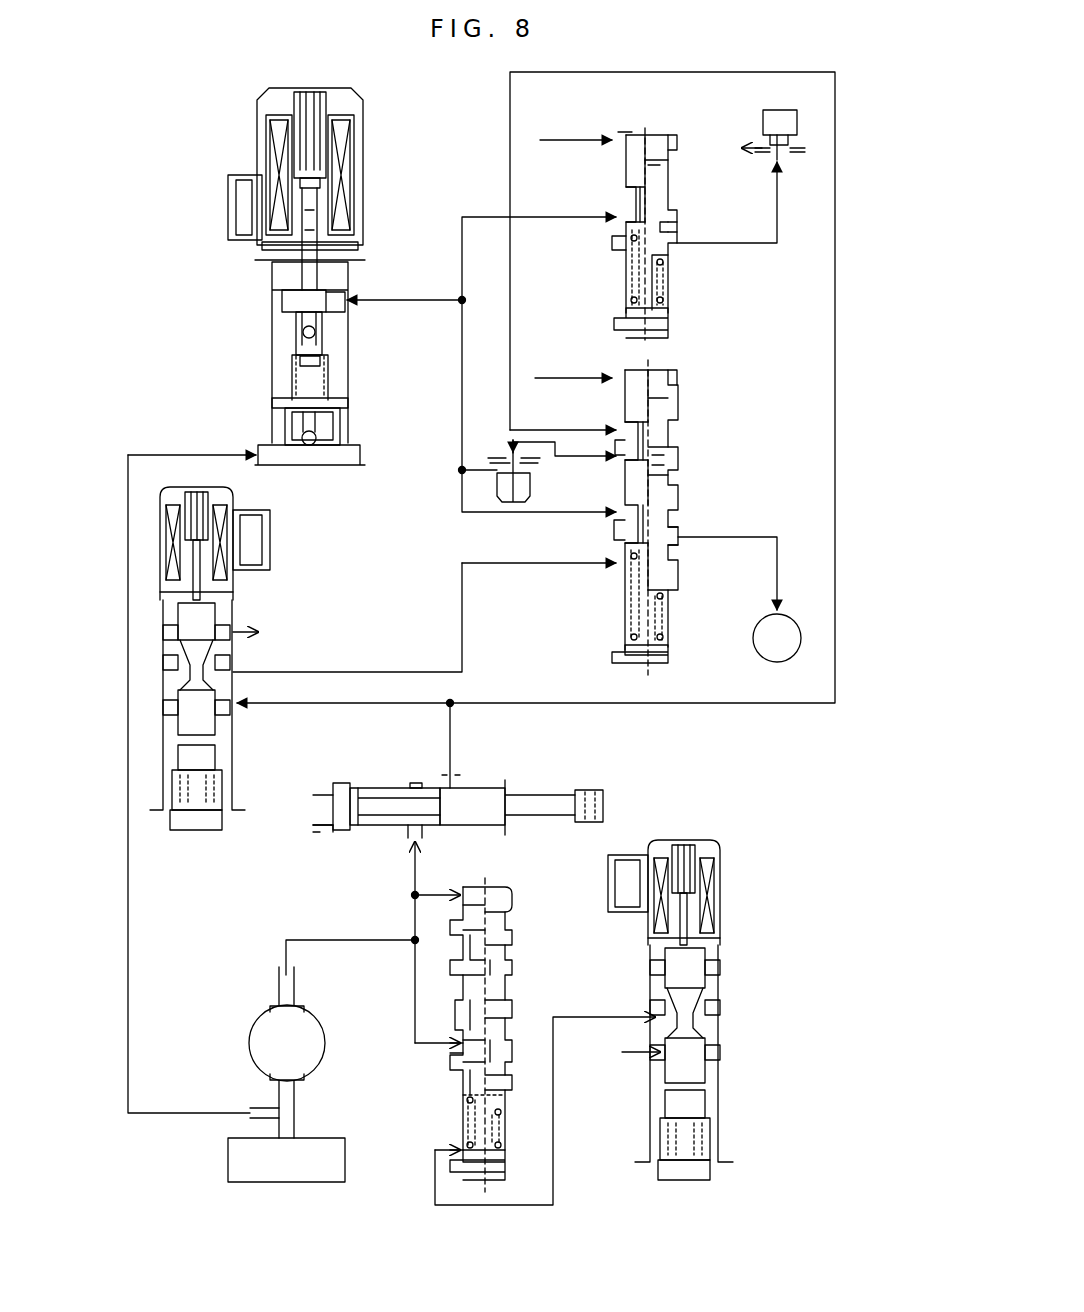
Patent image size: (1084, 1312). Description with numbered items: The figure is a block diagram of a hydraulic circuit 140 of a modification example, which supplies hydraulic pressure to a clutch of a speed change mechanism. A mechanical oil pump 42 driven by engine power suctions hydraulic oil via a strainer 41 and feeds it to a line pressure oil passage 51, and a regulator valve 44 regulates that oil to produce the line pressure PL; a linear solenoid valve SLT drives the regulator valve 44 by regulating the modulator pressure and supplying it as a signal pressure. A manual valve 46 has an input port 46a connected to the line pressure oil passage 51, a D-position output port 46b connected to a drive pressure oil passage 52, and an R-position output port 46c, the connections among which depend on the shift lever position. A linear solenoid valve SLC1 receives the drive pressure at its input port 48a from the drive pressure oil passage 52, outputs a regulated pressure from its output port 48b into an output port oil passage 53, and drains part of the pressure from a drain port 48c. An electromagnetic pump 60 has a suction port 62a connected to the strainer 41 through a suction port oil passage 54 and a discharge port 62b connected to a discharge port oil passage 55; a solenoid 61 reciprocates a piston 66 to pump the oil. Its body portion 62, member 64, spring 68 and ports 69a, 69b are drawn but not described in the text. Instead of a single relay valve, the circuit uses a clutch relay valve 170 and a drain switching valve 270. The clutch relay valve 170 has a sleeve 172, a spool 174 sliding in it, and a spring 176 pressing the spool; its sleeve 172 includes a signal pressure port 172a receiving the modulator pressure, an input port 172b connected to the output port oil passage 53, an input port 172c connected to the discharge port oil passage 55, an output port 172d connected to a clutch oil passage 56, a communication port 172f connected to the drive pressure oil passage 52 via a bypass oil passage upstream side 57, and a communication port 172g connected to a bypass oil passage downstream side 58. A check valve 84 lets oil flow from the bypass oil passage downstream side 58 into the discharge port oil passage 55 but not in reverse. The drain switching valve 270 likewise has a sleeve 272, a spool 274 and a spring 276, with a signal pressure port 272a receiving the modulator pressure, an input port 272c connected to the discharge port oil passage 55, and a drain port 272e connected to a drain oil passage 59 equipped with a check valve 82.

The hydraulic circuit 140 is at (205, 128).
The electromagnetic pump 60 is at (382, 124).
The solenoid 61 is at (355, 185).
The sleeve 62 is at (270, 290).
The suction port 62a is at (258, 446).
The discharge port 62b is at (345, 272).
The check ball valve 64 is at (332, 432).
The piston 66 is at (298, 334).
The spring 68 is at (328, 372).
The feedback port 69a is at (305, 376).
The drain port 69b is at (345, 322).
The discharge port oil passage 55 is at (412, 300).
The suction port oil passage 54 is at (160, 1113).
The bypass oil passage upstream side 57 is at (835, 438).
The drain switching valve 270 is at (662, 124).
The sleeve 272 is at (628, 126).
The signal pressure port 272a is at (626, 176).
The input port 272c is at (620, 230).
The drain port 272e is at (712, 230).
The spool 274 is at (668, 180).
The spring 276 is at (666, 278).
The check valve 82 is at (808, 132).
The drain oil passage 59 is at (768, 250).
The C1 relay valve 170 is at (686, 370).
The sleeve 172 is at (628, 370).
The signal pressure port 172a is at (622, 390).
The input port 172b is at (620, 572).
The input port 172c is at (620, 496).
The output port 172d is at (708, 522).
The communication port 172f is at (620, 418).
The communication port 172g is at (620, 468).
The spool 174 is at (668, 410).
The spring 176 is at (666, 600).
The check valve 84 is at (497, 452).
The bypass oil passage downstream side 58 is at (612, 458).
The C1 oil passage 56 is at (762, 538).
The output port oil passage 53 is at (460, 618).
The linear solenoid valve SLC1 is at (160, 840).
The input port 48a is at (238, 712).
The output port 48b is at (240, 670).
The drain port 48c is at (262, 605).
The manual valve 46 is at (330, 772).
The input port 46a is at (420, 835).
The D-position output port 46b is at (452, 786).
The R-position output port 46c is at (320, 832).
The drive pressure oil passage 52 is at (452, 740).
The line pressure oil passage 51 is at (412, 886).
The line pressure PL is at (352, 941).
The mechanical oil pump 42 is at (312, 1020).
The strainer 41 is at (335, 1126).
The regulator valve 44 is at (516, 888).
The linear solenoid valve SLT is at (738, 882).